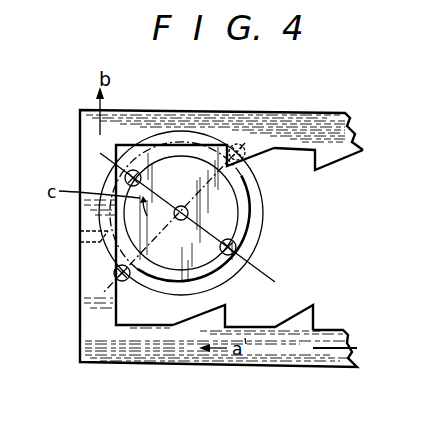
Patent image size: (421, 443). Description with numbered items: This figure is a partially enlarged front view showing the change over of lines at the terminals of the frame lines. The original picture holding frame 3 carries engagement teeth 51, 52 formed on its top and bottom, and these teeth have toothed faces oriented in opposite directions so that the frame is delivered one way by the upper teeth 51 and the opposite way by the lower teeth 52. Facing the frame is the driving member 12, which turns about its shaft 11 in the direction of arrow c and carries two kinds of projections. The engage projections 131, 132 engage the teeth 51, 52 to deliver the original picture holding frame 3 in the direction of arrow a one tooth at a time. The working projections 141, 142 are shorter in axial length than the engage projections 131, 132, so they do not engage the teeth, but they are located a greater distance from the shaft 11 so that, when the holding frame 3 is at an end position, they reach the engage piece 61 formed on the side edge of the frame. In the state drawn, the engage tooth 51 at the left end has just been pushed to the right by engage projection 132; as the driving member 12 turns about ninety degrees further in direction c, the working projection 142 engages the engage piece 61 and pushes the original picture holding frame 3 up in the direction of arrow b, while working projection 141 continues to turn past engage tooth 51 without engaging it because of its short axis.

The original picture holding frame 3 is at (337, 132).
The shaft 11 is at (246, 201).
The driving member 12 is at (246, 222).
The engage projection 131 is at (136, 171).
The engage projection 132 is at (237, 251).
The working projection 141 is at (243, 145).
The working projection 142 is at (113, 276).
The engagement tooth 51 is at (340, 163).
The engagement tooth 52 is at (229, 313).
The engage piece 61 is at (97, 240).